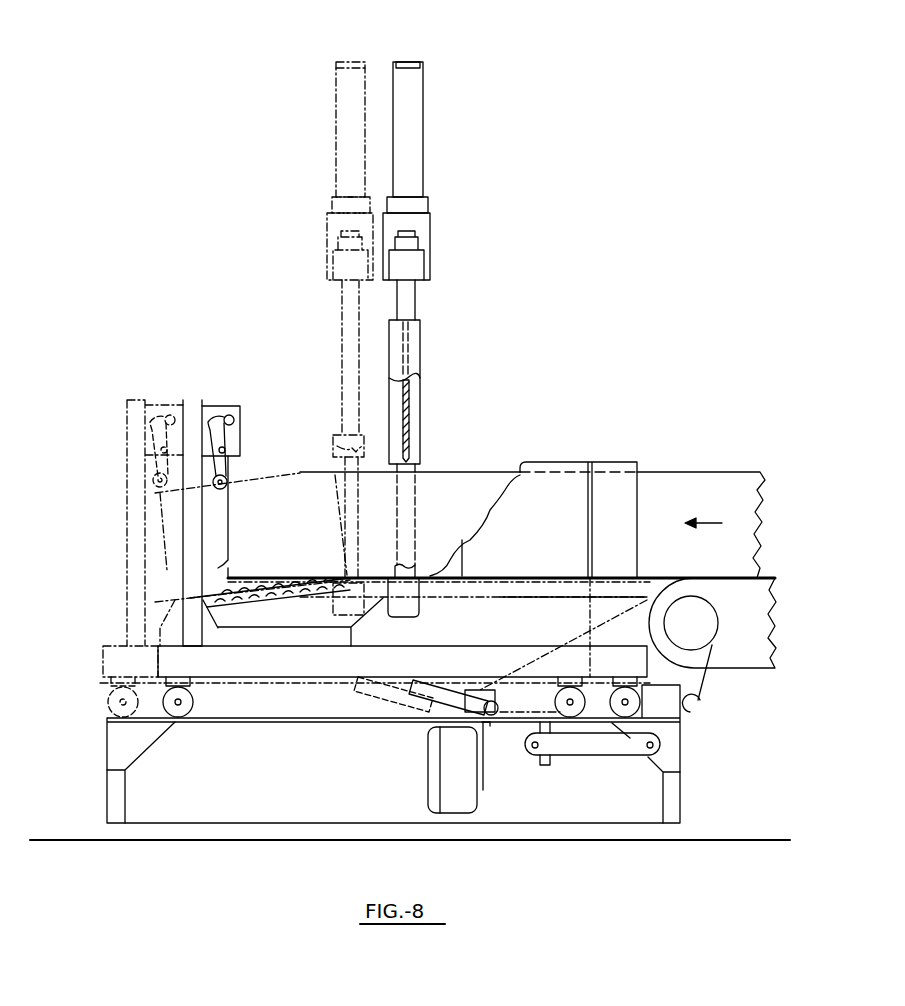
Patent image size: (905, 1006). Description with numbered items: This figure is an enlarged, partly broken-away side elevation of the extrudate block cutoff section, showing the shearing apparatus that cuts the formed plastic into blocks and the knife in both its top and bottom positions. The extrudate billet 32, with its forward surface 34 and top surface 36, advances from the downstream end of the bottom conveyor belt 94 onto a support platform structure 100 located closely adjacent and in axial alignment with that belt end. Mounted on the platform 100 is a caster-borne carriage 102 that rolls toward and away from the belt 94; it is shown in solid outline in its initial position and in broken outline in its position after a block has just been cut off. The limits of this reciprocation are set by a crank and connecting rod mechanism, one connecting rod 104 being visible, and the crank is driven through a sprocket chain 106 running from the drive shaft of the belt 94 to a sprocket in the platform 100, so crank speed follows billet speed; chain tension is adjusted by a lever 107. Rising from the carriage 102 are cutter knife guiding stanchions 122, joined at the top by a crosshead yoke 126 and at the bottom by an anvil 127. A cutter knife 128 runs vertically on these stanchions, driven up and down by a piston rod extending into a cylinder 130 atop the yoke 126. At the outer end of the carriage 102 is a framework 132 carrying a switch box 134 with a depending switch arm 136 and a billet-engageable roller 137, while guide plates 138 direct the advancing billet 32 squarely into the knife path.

The extrudate billet 32 is at (690, 484).
The forward surface 34 is at (252, 587).
The top surface 36 is at (445, 476).
The bottom conveyor belt 94 is at (742, 668).
The support platform structure 100 is at (675, 787).
The carriage 102 is at (230, 667).
The connecting rod 104 is at (458, 700).
The sprocket chain 106 is at (712, 690).
The lever 107 is at (566, 752).
The cutter knife guiding stanchion 122 is at (410, 303).
The crosshead yoke 126 is at (425, 237).
The anvil 127 is at (411, 606).
The cutter knife 128 is at (410, 403).
The cylinder 130 is at (415, 128).
The framework 132 is at (197, 527).
The switch box 134 is at (219, 410).
The switch arm 136 is at (226, 467).
The billet-engageable roller 137 is at (227, 487).
The guide plates 138 is at (569, 462).